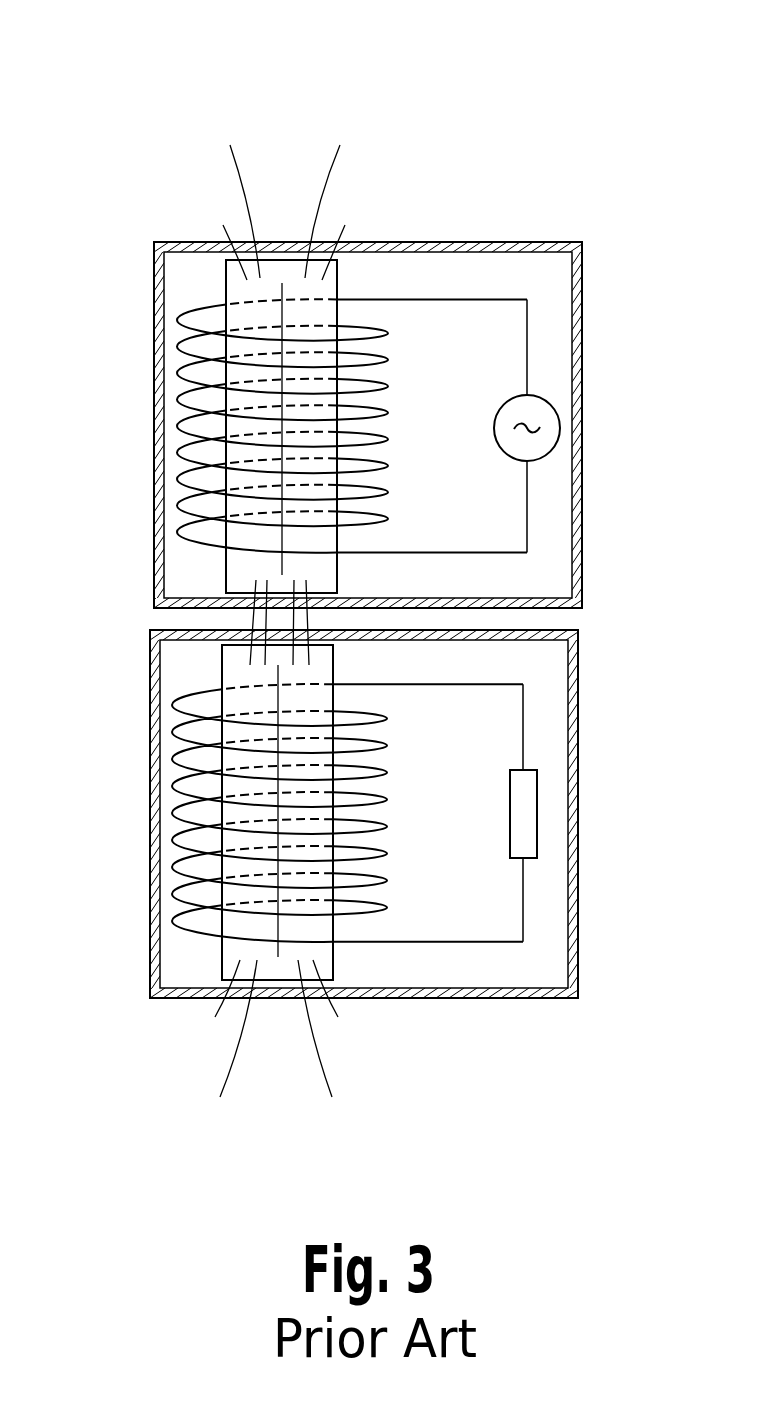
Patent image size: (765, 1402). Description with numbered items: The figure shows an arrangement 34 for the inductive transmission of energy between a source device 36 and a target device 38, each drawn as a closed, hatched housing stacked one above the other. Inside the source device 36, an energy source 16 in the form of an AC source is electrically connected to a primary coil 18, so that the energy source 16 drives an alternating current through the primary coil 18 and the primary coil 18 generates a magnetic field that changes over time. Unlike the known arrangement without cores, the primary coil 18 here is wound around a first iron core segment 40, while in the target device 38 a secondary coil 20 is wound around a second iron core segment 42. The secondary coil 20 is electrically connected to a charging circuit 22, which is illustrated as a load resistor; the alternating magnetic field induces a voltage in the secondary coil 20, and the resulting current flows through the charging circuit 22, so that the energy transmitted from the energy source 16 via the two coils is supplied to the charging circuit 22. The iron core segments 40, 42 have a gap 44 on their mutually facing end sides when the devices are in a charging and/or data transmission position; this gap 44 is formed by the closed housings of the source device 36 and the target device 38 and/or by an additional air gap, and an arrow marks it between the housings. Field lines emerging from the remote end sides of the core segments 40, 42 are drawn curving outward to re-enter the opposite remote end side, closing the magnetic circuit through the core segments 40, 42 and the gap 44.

The arrangement 34 is at (487, 67).
The source device 36 is at (580, 302).
The target device 38 is at (577, 678).
The first iron core segment 40 is at (242, 288).
The second iron core segment 42 is at (248, 673).
The primary coil 18 is at (178, 420).
The secondary coil 20 is at (170, 782).
The energy source 16 is at (548, 430).
The charging circuit 22 is at (523, 815).
The gap 44 is at (200, 620).